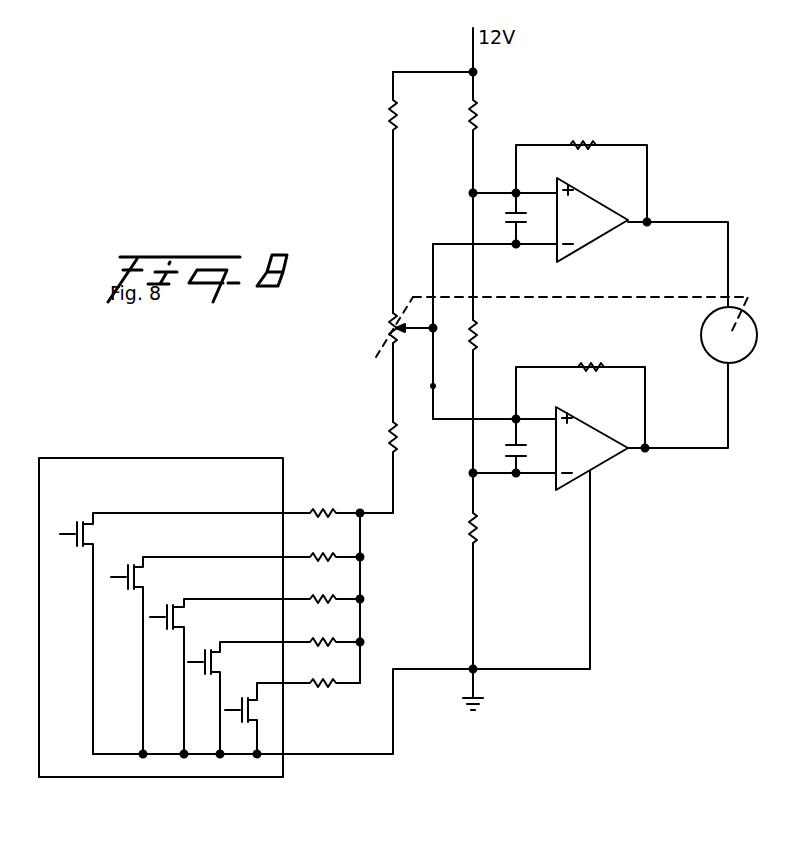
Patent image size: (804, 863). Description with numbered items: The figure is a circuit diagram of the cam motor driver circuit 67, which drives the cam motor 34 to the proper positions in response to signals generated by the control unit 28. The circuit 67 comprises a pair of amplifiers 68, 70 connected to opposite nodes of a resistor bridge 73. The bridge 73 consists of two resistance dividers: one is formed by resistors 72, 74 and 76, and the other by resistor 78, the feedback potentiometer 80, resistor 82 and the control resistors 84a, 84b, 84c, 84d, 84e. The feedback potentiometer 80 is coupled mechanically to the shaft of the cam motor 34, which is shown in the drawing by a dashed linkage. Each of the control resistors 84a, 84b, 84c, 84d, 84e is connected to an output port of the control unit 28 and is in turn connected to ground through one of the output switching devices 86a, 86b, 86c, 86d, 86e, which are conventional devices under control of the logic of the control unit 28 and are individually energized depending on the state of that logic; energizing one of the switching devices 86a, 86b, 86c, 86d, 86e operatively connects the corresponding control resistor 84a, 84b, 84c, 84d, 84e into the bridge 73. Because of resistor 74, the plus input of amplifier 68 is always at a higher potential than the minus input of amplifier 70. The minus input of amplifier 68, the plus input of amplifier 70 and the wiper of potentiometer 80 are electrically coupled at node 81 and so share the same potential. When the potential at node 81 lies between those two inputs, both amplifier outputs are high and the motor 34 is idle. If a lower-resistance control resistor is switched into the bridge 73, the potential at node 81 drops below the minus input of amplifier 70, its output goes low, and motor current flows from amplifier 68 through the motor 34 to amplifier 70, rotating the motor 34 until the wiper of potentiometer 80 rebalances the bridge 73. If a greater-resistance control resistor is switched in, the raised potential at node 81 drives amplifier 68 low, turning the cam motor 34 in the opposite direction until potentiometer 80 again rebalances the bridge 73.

The cam motor driver circuit 67 is at (638, 78).
The amplifier 68 is at (597, 230).
The amplifier 70 is at (595, 457).
The resistor 72 is at (478, 118).
The resistor bridge 73 is at (447, 204).
The resistor 74 is at (478, 327).
The resistor 76 is at (480, 525).
The resistor 78 is at (390, 118).
The feedback potentiometer 80 is at (390, 331).
The node 81 is at (431, 388).
The resistor 82 is at (390, 428).
The control resistor 84a is at (336, 503).
The control resistor 84b is at (338, 547).
The control resistor 84c is at (337, 589).
The control resistor 84d is at (338, 632).
The control resistor 84e is at (338, 674).
The output switching device 86a is at (70, 520).
The output switching device 86b is at (121, 563).
The output switching device 86c is at (160, 605).
The output switching device 86d is at (198, 648).
The output switching device 86e is at (235, 692).
The control unit 28 is at (161, 601).
The cam motor 34 is at (742, 348).